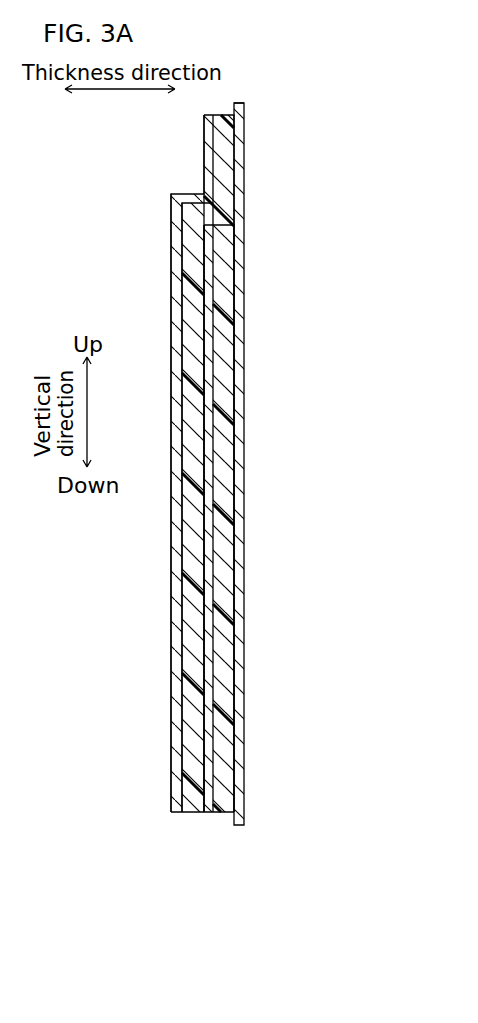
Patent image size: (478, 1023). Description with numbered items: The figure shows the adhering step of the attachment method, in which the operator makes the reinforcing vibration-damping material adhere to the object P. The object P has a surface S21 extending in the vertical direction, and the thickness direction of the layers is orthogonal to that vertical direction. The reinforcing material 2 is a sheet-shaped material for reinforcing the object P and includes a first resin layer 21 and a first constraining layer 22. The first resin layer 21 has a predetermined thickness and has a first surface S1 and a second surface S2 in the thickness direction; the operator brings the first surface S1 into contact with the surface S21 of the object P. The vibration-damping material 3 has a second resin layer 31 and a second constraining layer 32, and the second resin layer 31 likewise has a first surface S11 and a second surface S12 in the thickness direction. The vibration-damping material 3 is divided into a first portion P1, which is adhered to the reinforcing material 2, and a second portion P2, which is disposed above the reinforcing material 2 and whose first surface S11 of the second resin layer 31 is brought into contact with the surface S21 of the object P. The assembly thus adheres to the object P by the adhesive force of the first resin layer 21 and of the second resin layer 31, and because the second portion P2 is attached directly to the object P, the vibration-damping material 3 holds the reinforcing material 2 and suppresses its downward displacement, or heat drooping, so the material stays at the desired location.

The vibration-damping material 3 is at (151, 512).
The second constraining layer 32 is at (179, 812).
The second resin layer 31 is at (193, 812).
The reinforcing material 2 is at (207, 512).
The first constraining layer 22 is at (208, 812).
The first resin layer 21 is at (223, 812).
The object P is at (244, 797).
The first portion P1 is at (172, 513).
The second portion P2 is at (204, 151).
The first surface S1 is at (236, 340).
The second surface S2 is at (208, 312).
The first surface S11 is at (205, 378).
The second surface S12 is at (177, 406).
The surface S21 is at (237, 103).